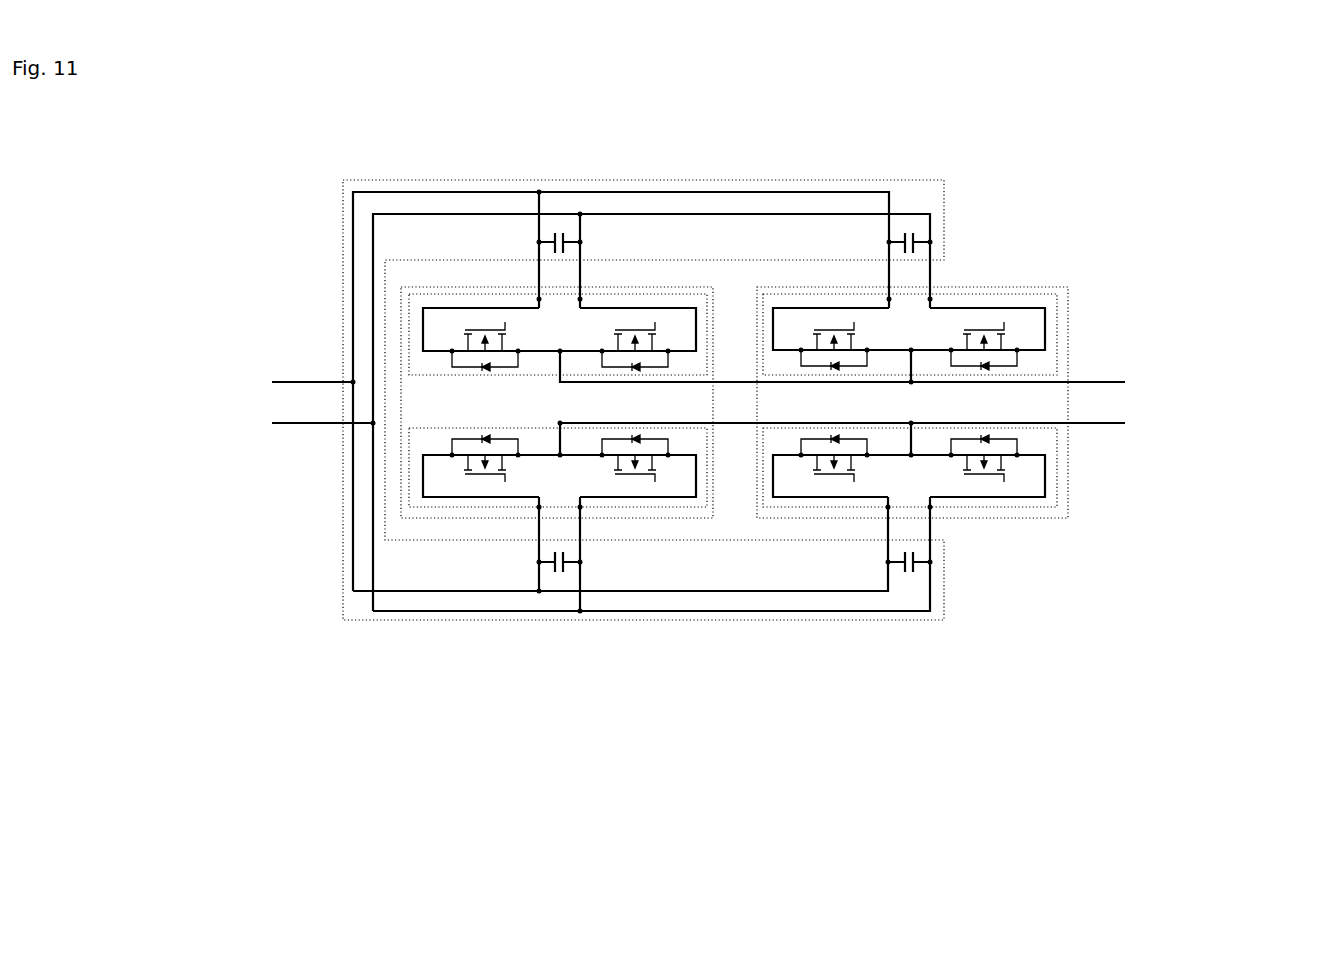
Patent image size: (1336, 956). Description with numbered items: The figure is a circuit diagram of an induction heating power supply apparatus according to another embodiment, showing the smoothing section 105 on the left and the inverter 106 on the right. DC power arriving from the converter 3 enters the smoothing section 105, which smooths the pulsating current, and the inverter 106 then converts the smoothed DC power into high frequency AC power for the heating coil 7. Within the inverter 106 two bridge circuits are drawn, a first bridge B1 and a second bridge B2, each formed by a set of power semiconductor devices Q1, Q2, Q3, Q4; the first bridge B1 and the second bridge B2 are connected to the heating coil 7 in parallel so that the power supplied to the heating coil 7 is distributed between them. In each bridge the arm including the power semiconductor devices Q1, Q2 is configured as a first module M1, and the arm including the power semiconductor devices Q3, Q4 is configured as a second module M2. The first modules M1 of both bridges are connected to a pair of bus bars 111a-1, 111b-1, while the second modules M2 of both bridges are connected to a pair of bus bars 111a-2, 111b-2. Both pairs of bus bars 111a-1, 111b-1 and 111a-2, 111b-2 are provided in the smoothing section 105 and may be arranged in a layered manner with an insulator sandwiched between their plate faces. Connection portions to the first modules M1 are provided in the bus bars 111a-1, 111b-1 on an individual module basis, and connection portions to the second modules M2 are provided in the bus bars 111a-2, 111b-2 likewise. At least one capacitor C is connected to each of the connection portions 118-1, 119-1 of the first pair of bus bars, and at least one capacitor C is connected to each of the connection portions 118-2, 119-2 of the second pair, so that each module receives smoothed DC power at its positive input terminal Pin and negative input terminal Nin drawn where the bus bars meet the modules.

The smoothing section 105 is at (578, 416).
The inverter 106 is at (779, 415).
The bus bar 111a-1 is at (487, 192).
The bus bar 111b-1 is at (430, 214).
The bus bar 111a-2 is at (463, 591).
The bus bar 111b-2 is at (515, 611).
The connection portion 118-1 is at (585, 225).
The connection portion 118-2 is at (587, 580).
The connection portion 119-1 is at (935, 225).
The connection portion 119-2 is at (937, 580).
The converter 3 is at (265, 403).
The heating coil 7 is at (1130, 402).
The first bridge B1 is at (714, 293).
The second bridge B2 is at (1069, 294).
The first module M1 is at (755, 334).
The second module M2 is at (756, 467).
The power semiconductor device Q1 is at (653, 346).
The power semiconductor device Q2 is at (804, 346).
The power semiconductor device Q3 is at (653, 459).
The power semiconductor device Q4 is at (804, 459).
The capacitor C is at (775, 402).
The positive input terminal Pin is at (537, 299).
The negative input terminal Nin is at (582, 299).